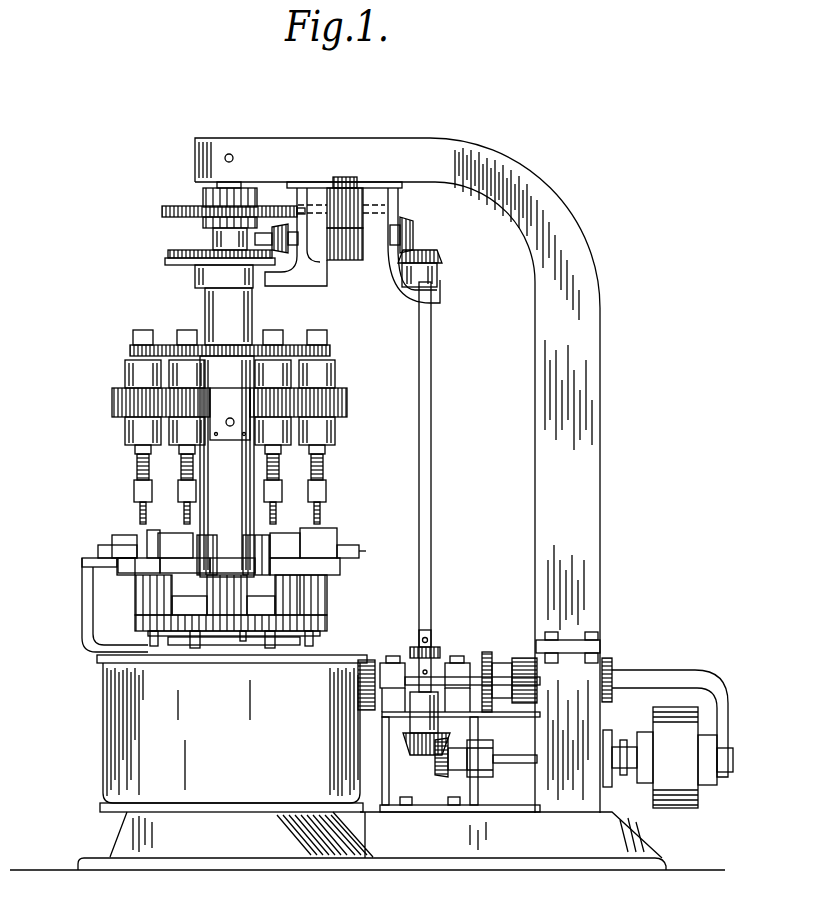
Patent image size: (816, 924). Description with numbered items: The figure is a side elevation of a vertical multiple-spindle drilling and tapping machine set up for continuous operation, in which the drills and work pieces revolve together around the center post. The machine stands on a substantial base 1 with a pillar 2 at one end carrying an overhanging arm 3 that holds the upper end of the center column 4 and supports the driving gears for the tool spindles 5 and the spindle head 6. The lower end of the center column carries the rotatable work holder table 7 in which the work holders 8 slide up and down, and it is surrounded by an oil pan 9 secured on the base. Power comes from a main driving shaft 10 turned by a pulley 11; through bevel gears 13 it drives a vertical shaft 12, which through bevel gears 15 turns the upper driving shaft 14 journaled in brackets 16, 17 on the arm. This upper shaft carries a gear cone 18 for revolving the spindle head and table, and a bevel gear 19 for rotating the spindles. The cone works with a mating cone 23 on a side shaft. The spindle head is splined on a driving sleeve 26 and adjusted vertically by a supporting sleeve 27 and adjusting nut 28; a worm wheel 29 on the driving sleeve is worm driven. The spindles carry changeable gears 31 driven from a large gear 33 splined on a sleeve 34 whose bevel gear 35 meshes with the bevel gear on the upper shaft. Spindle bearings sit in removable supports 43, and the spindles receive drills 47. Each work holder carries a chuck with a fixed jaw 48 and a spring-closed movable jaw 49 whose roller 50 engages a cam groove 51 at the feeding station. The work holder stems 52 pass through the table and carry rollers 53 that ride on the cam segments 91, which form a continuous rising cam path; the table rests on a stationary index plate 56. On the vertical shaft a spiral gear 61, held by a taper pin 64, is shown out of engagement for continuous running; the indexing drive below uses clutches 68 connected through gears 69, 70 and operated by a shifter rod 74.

The base 1 is at (367, 841).
The pillar 2 is at (515, 475).
The overhanging arm 3 is at (315, 163).
The center column 4 is at (245, 186).
The tool spindles 5 is at (178, 460).
The spindle head 6 is at (347, 400).
The work holder table 7 is at (330, 624).
The work holders 8 is at (135, 570).
The oil pan 9 is at (232, 733).
The main driving shaft 10 is at (520, 764).
The pulley 11 is at (668, 757).
The vertical shaft 12 is at (430, 514).
The bevel gears 13 is at (440, 762).
The upper driving shaft 14 is at (340, 262).
The bevel gears 15 is at (413, 235).
The bracket 16 is at (395, 292).
The bracket 17 is at (300, 286).
The gear cone 18 is at (352, 258).
The bevel gear 19 is at (272, 235).
The mating cone 23 is at (352, 184).
The driving sleeve 26 is at (210, 236).
The supporting sleeve 27 is at (227, 466).
The adjusting nut 28 is at (218, 430).
The worm wheel 29 is at (168, 208).
The changeable gears 31 is at (130, 351).
The large gear 33 is at (225, 326).
The sleeve 34 is at (225, 304).
The bevel gear 35 is at (172, 259).
The supports 43 is at (140, 387).
The drills 47 is at (135, 508).
The fixed jaw 48 is at (152, 540).
The movable jaw 49 is at (120, 540).
The roller 50 is at (360, 551).
The cam groove 51 is at (82, 559).
The stems 52 is at (195, 640).
The rollers 53 is at (150, 640).
The index plate 56 is at (245, 635).
The spiral gear 61 is at (433, 650).
The taper pin 64 is at (425, 647).
The clutches 68 is at (395, 663).
The gear 69 is at (490, 705).
The gear 70 is at (487, 652).
The shifter rod 74 is at (525, 716).
The cam segments 91 is at (312, 648).